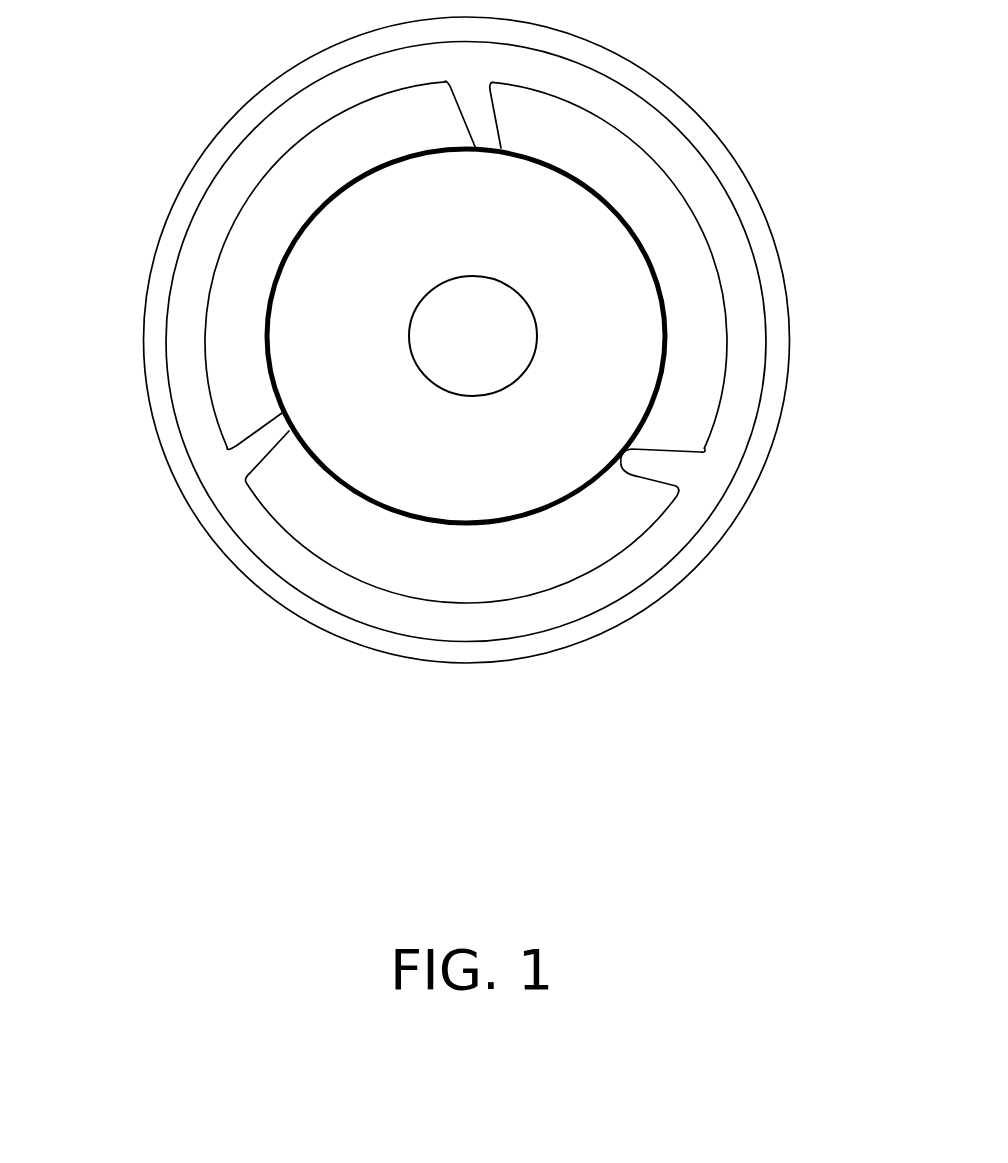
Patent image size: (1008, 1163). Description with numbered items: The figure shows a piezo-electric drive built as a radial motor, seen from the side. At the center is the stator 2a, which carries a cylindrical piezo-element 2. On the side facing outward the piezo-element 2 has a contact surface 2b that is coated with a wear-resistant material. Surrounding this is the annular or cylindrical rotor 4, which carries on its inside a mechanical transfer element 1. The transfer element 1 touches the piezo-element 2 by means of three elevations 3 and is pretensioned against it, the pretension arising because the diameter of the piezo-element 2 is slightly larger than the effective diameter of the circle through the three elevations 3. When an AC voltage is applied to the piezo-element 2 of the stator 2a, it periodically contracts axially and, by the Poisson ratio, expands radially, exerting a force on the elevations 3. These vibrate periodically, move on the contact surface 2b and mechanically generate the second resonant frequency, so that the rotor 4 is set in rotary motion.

The mechanical transfer element 1 is at (220, 202).
The piezo-element 2 is at (578, 263).
The stator 2a is at (463, 322).
The contact surface 2b is at (575, 173).
The elevations 3 is at (660, 465).
The rotor 4 is at (435, 648).